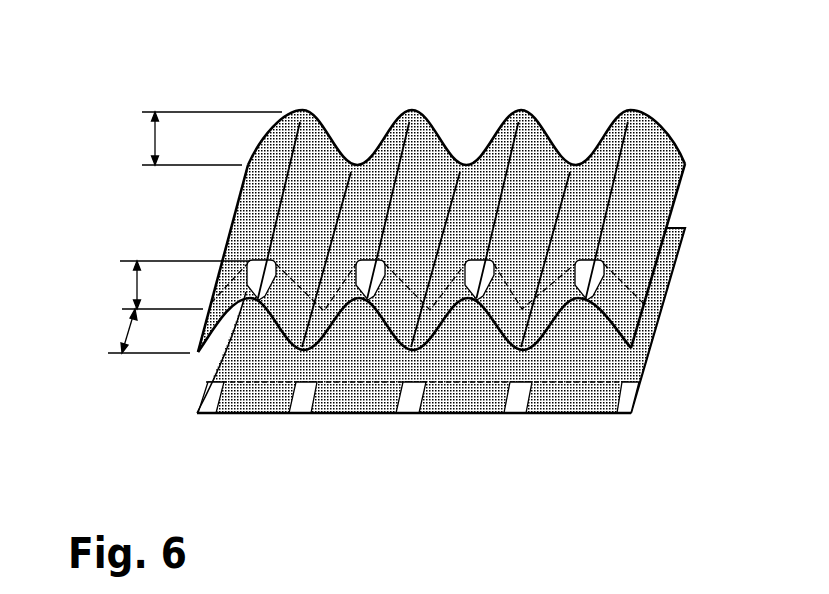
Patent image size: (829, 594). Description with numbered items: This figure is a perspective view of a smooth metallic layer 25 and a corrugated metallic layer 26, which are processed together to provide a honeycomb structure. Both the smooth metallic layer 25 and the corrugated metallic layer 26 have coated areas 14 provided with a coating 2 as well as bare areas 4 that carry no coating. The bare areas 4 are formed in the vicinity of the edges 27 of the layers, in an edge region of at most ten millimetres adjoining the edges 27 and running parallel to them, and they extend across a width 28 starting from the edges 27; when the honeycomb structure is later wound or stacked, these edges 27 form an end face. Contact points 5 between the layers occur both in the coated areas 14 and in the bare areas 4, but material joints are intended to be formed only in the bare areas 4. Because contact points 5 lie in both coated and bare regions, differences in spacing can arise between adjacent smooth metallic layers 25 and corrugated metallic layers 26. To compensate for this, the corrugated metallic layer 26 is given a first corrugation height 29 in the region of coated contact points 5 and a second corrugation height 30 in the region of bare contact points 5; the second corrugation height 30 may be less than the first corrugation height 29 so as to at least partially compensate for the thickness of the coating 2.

The coating 2 is at (657, 210).
The bare areas 4 is at (593, 280).
The contact points 5 is at (220, 364).
The coated areas 14 is at (657, 162).
The smooth metallic layer 25 is at (317, 417).
The corrugated metallic layer 26 is at (540, 120).
The edges 27 is at (510, 323).
The width 28 is at (133, 330).
The first corrugation height 29 is at (153, 130).
The second corrugation height 30 is at (135, 283).